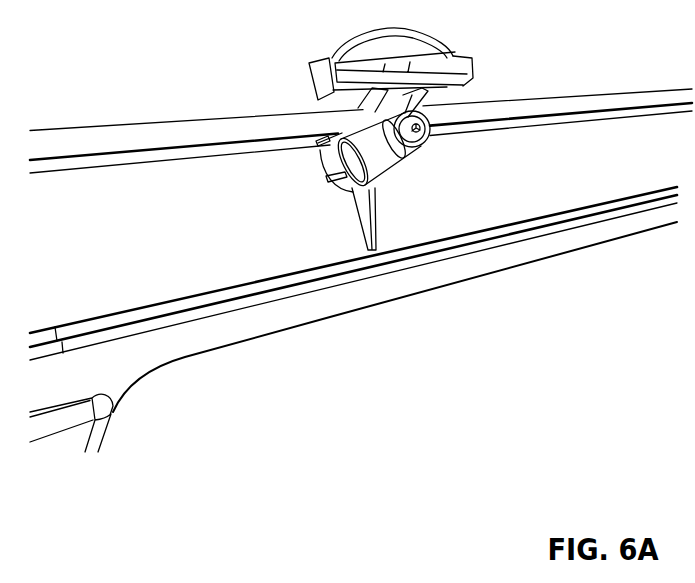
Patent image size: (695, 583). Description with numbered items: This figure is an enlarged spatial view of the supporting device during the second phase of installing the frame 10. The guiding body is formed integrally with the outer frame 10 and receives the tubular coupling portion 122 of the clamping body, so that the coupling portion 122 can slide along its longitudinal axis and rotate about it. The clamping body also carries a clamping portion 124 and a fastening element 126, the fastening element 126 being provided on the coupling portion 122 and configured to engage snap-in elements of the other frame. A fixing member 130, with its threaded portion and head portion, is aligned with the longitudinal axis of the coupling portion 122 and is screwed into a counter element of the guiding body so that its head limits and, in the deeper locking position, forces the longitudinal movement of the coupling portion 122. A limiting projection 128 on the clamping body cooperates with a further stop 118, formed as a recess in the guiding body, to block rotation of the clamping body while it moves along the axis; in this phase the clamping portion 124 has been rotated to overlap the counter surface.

The frame 10 is at (165, 227).
The further stop 118 is at (338, 139).
The tubular coupling portion 122 is at (373, 187).
The clamping portion 124 is at (317, 102).
The fastening element 126 is at (455, 56).
The limiting projection 128 is at (368, 143).
The fixing member 130 is at (430, 148).